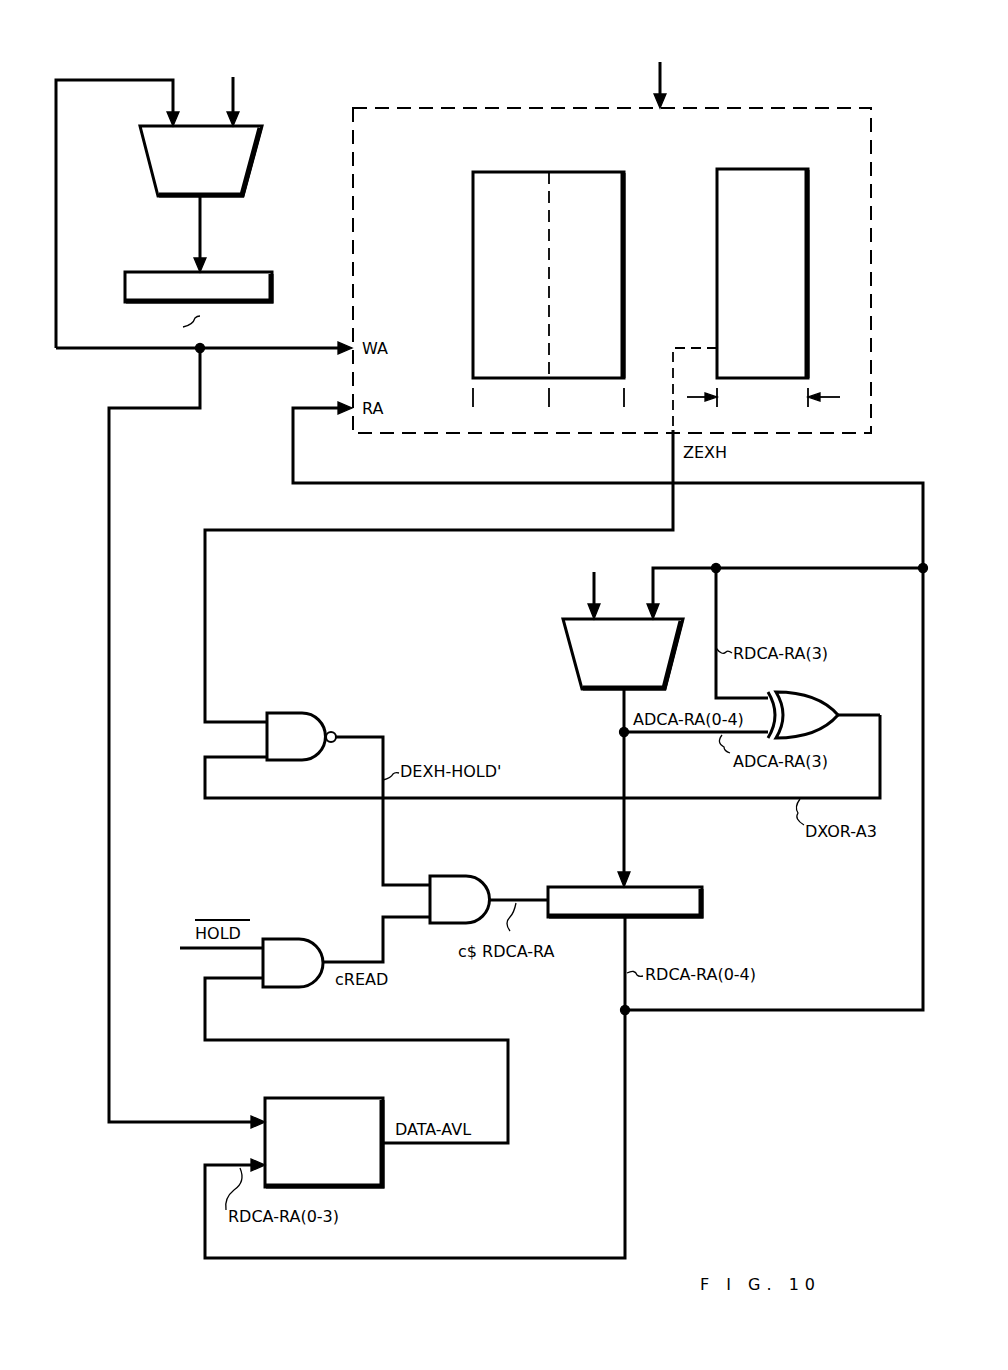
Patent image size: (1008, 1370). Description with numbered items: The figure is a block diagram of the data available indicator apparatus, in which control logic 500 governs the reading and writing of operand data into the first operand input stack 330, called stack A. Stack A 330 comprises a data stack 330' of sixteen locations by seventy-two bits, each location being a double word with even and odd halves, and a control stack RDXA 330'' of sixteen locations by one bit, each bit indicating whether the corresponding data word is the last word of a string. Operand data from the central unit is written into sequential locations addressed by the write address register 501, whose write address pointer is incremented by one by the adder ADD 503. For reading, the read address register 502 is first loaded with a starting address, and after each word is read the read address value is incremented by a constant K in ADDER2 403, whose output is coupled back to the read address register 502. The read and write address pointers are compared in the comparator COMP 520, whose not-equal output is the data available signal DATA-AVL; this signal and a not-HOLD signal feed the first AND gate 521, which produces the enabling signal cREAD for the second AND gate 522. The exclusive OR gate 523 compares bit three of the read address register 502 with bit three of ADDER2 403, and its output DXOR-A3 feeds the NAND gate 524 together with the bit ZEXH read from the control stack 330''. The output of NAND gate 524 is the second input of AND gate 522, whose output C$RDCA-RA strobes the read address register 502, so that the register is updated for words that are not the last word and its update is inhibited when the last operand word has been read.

The control logic 500 is at (104, 42).
The adder ADD 503 is at (248, 176).
The write address register (RDCA-WA) 501 is at (272, 283).
The first operand input stack (stack A) 330 is at (612, 222).
The data stack A 330' is at (540, 273).
The control stack RDXA 330'' is at (756, 285).
The ADDER2 403 is at (568, 655).
The NAND gate 524 is at (296, 713).
The exclusive OR gate 523 is at (836, 708).
The second AND gate 522 is at (455, 876).
The first AND gate 521 is at (290, 938).
The read address register (RDCA-RA) 502 is at (703, 902).
The comparator COMP 520 is at (384, 1184).